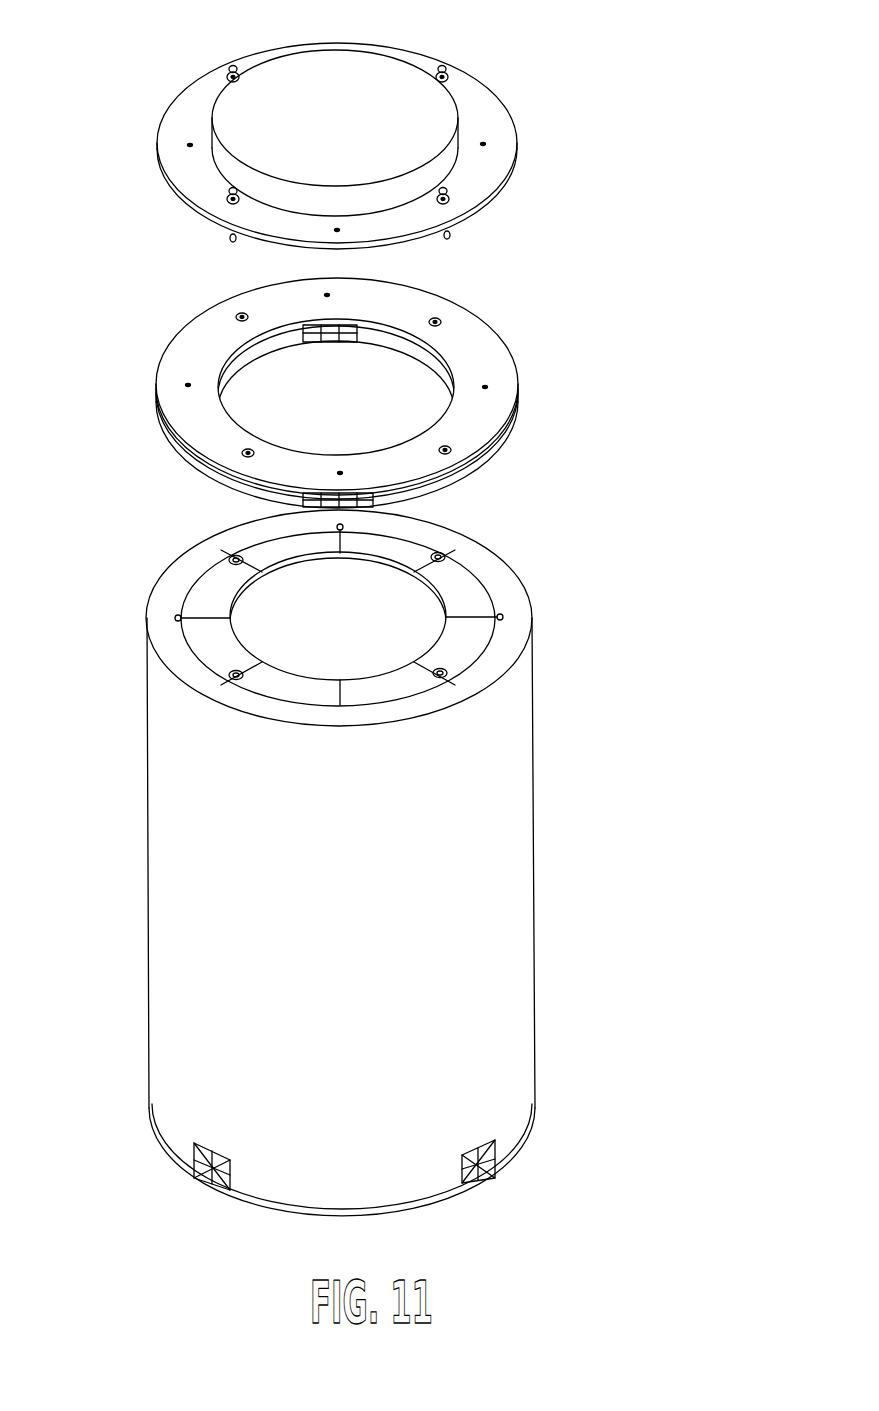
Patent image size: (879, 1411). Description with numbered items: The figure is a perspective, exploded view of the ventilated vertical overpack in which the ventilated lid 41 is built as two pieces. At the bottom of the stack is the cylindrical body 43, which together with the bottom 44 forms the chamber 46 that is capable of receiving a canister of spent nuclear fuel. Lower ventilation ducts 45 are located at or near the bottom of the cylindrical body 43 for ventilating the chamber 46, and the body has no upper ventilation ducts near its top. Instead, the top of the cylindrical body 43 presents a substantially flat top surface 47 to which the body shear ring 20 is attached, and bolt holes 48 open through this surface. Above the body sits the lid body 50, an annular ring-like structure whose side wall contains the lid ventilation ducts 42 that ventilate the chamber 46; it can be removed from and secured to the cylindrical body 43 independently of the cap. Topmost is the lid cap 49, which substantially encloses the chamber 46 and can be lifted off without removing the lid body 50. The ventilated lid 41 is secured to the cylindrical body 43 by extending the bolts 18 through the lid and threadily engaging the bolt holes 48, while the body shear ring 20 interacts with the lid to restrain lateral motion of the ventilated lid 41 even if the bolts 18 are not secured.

The bolts 18 is at (235, 67).
The body shear ring 20 is at (170, 642).
The ventilated lid 41 is at (132, 287).
The lid ventilation ducts 42 is at (315, 325).
The cylindrical body 43 is at (510, 872).
The bottom 44 is at (525, 1147).
The lower ventilation ducts 45 is at (200, 1177).
The chamber 46 is at (352, 638).
The top surface 47 is at (462, 637).
The bolt holes 48 is at (232, 556).
The lid cap 49 is at (499, 103).
The lid body 50 is at (500, 338).